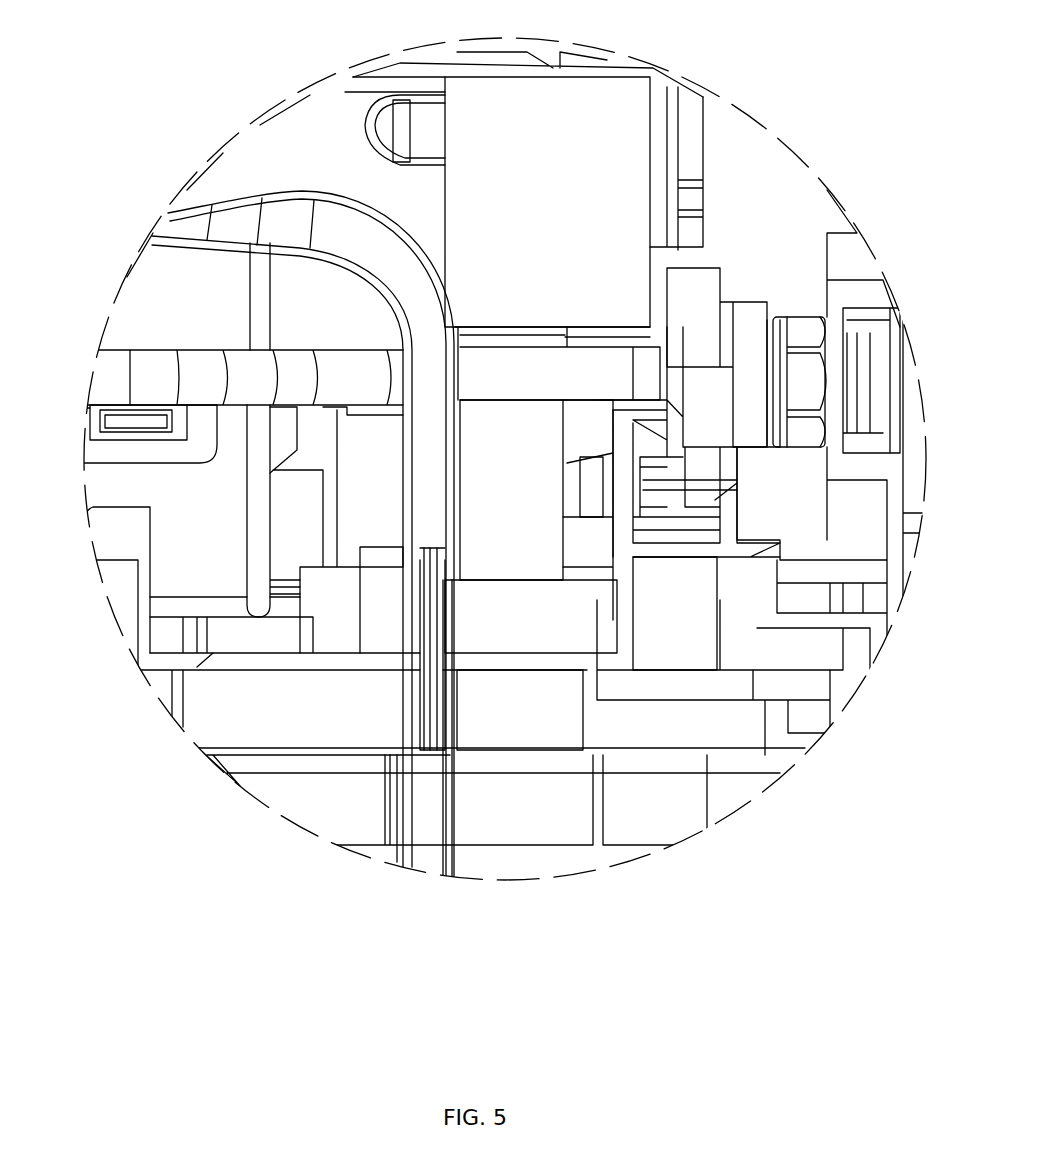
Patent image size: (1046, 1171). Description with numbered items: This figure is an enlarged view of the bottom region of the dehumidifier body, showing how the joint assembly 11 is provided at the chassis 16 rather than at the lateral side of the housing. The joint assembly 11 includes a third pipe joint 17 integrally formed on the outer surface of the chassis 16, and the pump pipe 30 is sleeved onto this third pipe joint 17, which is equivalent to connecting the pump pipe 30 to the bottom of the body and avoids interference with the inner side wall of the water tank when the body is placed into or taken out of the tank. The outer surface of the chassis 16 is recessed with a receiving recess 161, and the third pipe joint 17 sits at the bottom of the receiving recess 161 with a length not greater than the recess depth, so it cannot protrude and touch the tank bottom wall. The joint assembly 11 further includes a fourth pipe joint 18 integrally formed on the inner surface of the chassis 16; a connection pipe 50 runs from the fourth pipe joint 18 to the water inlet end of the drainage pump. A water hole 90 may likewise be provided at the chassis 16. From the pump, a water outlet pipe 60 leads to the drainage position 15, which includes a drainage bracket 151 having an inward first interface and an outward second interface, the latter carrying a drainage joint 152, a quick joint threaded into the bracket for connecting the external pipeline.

The joint assembly 11 is at (200, 880).
The drainage position 15 is at (917, 110).
The drainage bracket 151 is at (707, 345).
The drainage joint 152 is at (812, 383).
The chassis 16 is at (600, 660).
The receiving recess 161 is at (567, 733).
The third pipe joint 17 is at (432, 733).
The fourth pipe joint 18 is at (420, 622).
The pump pipe 30 is at (452, 832).
The connection pipe 50 is at (327, 223).
The water outlet pipe 60 is at (198, 375).
The water hole 90 is at (433, 637).